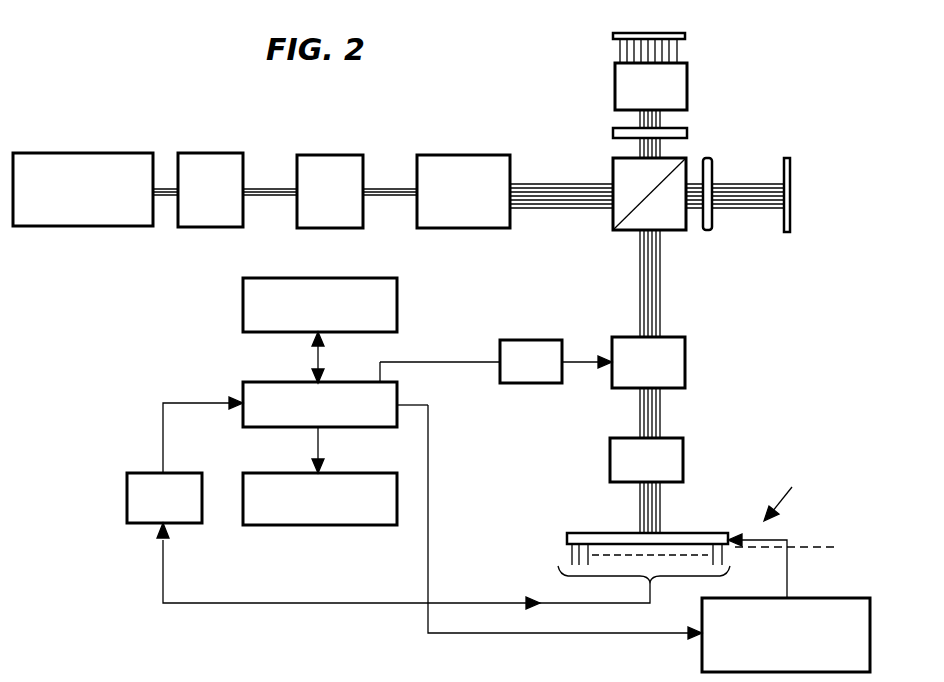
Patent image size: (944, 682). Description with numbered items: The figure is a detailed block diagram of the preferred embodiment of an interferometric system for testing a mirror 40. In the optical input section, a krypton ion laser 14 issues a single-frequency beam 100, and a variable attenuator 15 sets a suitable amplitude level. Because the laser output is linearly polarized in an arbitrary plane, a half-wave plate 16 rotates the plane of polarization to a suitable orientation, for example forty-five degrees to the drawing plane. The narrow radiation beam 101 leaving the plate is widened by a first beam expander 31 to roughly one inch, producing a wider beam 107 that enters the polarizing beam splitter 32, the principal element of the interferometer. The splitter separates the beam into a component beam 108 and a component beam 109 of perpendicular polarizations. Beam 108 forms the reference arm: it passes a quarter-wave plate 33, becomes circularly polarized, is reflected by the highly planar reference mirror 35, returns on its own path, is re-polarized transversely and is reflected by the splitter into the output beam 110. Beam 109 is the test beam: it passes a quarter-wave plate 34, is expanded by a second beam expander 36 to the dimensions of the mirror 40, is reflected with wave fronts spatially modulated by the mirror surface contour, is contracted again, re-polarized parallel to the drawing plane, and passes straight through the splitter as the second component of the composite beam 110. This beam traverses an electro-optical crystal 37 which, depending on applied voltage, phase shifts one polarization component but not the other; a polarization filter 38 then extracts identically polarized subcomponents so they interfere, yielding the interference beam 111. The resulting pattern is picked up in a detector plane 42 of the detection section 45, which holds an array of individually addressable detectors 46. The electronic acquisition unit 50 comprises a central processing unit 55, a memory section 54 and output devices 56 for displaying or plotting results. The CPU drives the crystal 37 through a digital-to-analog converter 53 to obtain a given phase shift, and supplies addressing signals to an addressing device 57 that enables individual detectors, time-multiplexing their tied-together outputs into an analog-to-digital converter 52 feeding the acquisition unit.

The krypton ion laser 14 is at (110, 162).
The variable attenuator 15 is at (221, 168).
The λ/2 plate 16 is at (336, 164).
The first beam expander 31 is at (460, 164).
The polarizing beam splitter 32 is at (616, 212).
The λ/4 plate 33 is at (712, 229).
The λ/4 plate 34 is at (690, 141).
The reference mirror 35 is at (792, 180).
The second beam expander 36 is at (675, 76).
The electro-optical crystal 37 is at (675, 338).
The polarization filter 38 is at (676, 452).
The mirror to be tested 40 is at (668, 33).
The detector plane 42 is at (806, 547).
The detection section 45 is at (788, 491).
The array of individually addressable detectors 46 is at (580, 536).
The electronic acquisition unit 50 is at (158, 394).
The analog-to-digital converter 52 is at (138, 478).
The digital-to-analog converter 53 is at (550, 348).
The memory section 54 is at (384, 312).
The central processing unit 55 is at (262, 388).
The output devices 56 is at (257, 480).
The addressing device 57 is at (832, 612).
The beam 100 is at (170, 195).
The radiation beam 101 is at (395, 196).
The wider beam 107 is at (548, 184).
The component beam 108 is at (693, 192).
The component beam 109 is at (628, 146).
The output beam 110 is at (658, 298).
The interference beam 111 is at (648, 512).